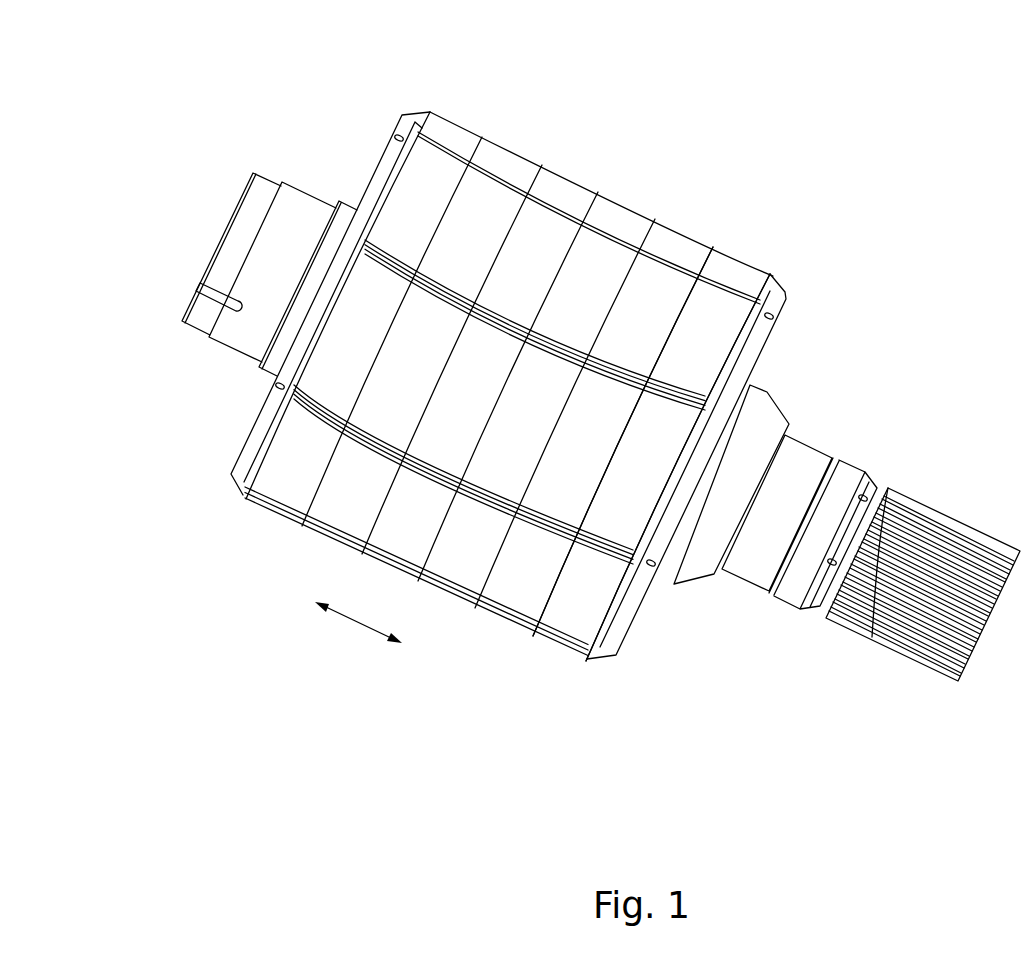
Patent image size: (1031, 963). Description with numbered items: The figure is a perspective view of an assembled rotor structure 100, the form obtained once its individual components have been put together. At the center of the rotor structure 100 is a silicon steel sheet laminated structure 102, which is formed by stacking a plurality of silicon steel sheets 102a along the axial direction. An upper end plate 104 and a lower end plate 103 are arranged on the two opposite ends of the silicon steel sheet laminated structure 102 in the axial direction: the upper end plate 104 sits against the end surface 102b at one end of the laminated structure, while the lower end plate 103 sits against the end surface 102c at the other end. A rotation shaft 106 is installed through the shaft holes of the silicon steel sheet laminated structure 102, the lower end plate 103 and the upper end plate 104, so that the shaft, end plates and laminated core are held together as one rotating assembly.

The rotor structure 100 is at (184, 169).
The silicon steel sheet laminated structure 102 is at (703, 67).
The silicon steel sheets 102a is at (468, 137).
The end surface 102b is at (424, 112).
The end surface 102c is at (772, 274).
The lower end plate 103 is at (780, 291).
The upper end plate 104 is at (408, 114).
The rotation shaft 106 is at (305, 194).